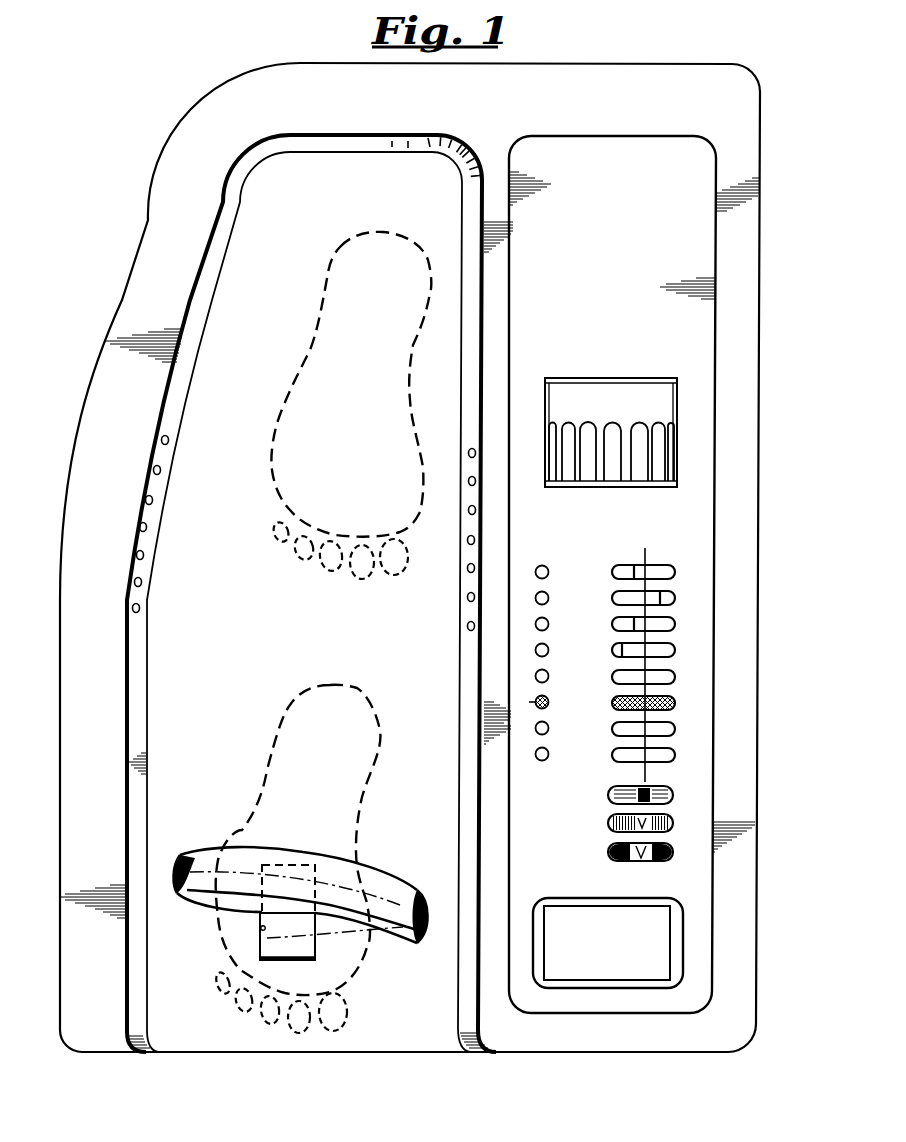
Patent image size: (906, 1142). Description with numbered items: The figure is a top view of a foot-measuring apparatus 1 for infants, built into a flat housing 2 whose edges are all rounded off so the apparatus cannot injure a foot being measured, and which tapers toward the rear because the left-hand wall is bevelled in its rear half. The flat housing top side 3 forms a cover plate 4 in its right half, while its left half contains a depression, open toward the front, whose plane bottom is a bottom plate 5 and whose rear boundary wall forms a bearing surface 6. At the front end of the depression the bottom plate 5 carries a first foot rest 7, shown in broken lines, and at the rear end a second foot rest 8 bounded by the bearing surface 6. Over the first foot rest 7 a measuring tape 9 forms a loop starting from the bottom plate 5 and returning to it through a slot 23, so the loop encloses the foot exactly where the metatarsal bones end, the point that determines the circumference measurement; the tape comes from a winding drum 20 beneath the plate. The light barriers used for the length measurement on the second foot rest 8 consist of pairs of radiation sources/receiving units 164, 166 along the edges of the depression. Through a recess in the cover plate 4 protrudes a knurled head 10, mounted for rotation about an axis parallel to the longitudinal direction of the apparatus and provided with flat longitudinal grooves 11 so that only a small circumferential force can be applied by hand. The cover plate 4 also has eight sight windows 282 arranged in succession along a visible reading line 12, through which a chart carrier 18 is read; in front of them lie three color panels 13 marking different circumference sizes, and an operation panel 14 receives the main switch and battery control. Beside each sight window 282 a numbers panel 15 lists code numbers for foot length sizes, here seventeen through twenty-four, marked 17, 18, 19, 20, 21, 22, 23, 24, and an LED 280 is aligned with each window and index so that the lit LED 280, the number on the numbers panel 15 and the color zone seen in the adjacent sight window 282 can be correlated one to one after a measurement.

The measuring apparatus 1 is at (165, 56).
The housing 2 is at (235, 68).
The housing top side 3 is at (173, 223).
The cover plate 4 is at (704, 240).
The bottom plate 5 is at (232, 284).
The bearing surface 6 is at (401, 148).
The first foot rest 7 is at (317, 812).
The second foot rest 8 is at (361, 420).
The measuring tape 9 is at (206, 849).
The knurled head 10 is at (611, 430).
The longitudinal grooves 11 is at (615, 462).
The reading line 12 is at (679, 660).
The color panels 13 is at (607, 852).
The operation panel 14 is at (608, 943).
The numbers panel 15 is at (497, 655).
The indicator lamp 17 is at (542, 572).
The chart carrier 18 is at (542, 598).
The indicator lamp 19 is at (542, 624).
The winding drum 20 is at (542, 650).
The indicator lamp 21 is at (542, 676).
The indicator lamp 22 is at (539, 702).
The slot 23 is at (260, 929).
The indicator lamp 24 is at (542, 754).
The radiation sources/receiving units 164 is at (153, 500).
The radiation sources/receiving units 166 is at (467, 510).
The LED 280 is at (483, 727).
The sight windows 282 is at (676, 572).